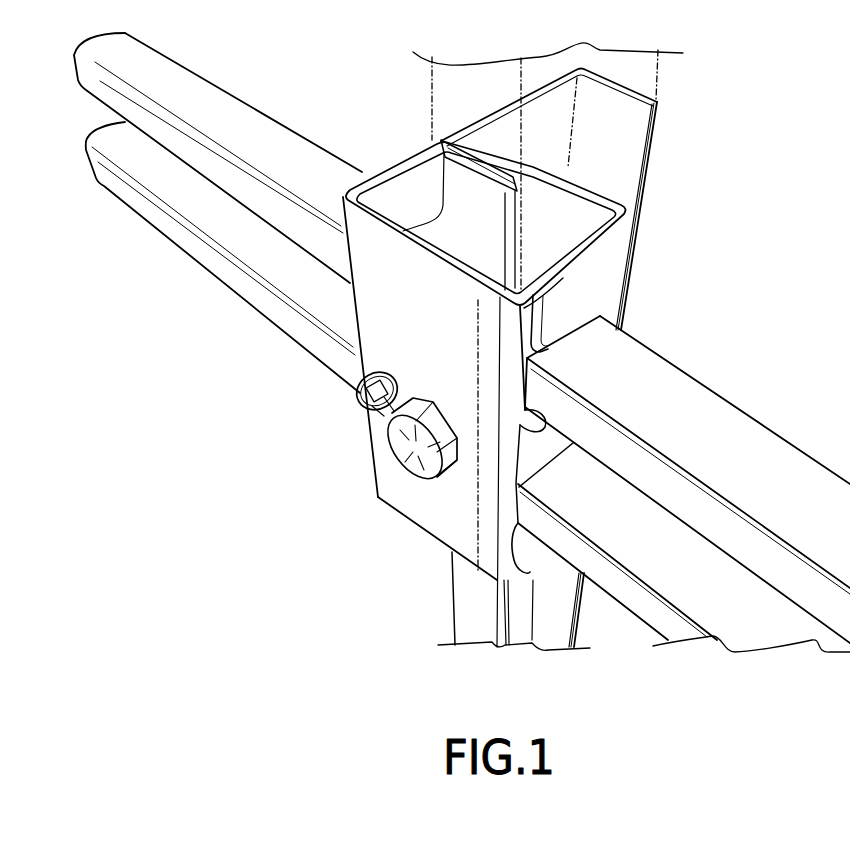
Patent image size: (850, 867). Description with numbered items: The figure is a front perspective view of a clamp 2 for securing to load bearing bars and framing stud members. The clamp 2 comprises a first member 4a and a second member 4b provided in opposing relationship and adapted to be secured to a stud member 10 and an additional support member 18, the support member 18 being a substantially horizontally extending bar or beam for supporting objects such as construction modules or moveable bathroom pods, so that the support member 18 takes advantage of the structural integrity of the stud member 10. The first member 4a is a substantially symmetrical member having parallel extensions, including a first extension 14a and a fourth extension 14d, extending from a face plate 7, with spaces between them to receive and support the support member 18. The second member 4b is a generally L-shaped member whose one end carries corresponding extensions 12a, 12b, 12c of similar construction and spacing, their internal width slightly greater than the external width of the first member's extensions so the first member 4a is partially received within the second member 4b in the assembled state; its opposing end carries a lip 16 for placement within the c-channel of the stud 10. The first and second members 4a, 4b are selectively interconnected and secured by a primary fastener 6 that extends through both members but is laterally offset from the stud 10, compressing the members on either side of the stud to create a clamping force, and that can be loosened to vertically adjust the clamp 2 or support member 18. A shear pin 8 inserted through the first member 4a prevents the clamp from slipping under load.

The clamp 2 is at (308, 510).
The first member 4a is at (372, 358).
The second member 4b is at (621, 240).
The primary fastener 6 is at (388, 437).
The face plate 7 is at (408, 516).
The shear pin 8 is at (370, 400).
The stud member 10 is at (636, 135).
The extension of second member 12a is at (563, 307).
The extension of second member 12b is at (514, 462).
The extension of second member 12c is at (527, 562).
The first extension 14a is at (543, 252).
The fourth extension 14d is at (402, 172).
The lip 16 is at (455, 137).
The support member 18 is at (753, 430).